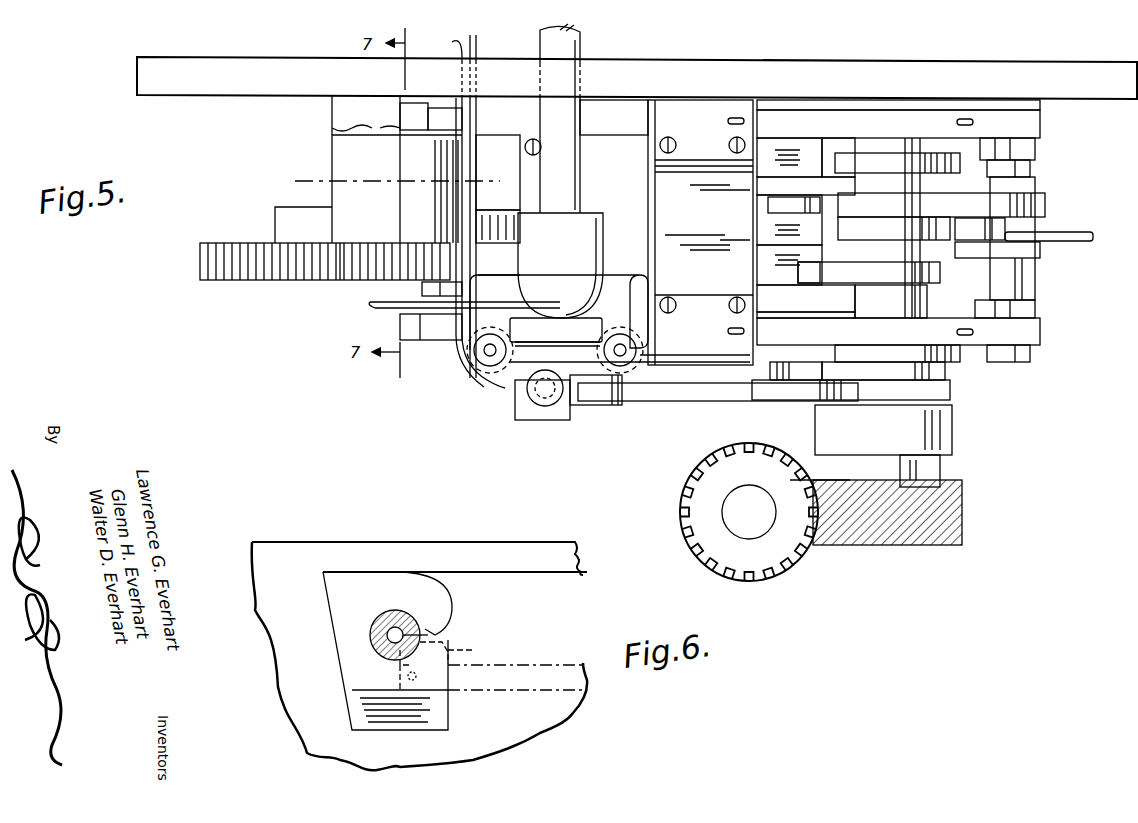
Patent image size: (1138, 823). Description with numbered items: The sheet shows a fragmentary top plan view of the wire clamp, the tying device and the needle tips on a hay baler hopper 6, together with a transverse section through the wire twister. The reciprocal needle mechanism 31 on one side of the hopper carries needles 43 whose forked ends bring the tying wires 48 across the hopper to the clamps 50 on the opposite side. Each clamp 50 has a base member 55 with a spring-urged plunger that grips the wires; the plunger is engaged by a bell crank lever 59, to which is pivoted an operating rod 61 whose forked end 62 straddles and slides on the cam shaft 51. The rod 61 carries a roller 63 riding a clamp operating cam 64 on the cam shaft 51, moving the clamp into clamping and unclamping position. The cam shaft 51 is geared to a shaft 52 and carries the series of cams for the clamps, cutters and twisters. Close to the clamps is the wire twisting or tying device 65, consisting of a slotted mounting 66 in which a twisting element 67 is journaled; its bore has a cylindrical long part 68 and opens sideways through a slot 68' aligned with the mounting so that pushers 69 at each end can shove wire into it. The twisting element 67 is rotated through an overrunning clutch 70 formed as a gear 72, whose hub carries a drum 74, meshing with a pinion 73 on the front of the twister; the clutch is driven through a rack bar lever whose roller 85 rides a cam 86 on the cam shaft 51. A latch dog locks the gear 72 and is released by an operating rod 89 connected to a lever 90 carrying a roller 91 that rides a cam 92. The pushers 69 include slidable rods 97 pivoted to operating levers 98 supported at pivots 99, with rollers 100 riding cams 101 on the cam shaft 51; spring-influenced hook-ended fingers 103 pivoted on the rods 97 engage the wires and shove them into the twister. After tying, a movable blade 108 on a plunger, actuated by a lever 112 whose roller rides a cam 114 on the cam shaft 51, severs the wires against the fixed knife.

In FIG. 5, the hopper 6 is at (395, 181).
In FIG. 5, the needle mechanism 31 is at (580, 225).
In FIG. 5, the needles 43 is at (578, 52).
In FIG. 5, the tying wires 48 is at (655, 200).
In FIG. 5, the clamps 50 is at (530, 402).
In FIG. 5, the cam shaft 51 is at (891, 301).
In FIG. 5, the shaft 52 is at (821, 512).
In FIG. 5, the base member 55 is at (550, 420).
In FIG. 5, the bell crank lever 59 is at (602, 406).
In FIG. 5, the operating rod 61 is at (672, 400).
In FIG. 5, the forked end 62 is at (851, 390).
In FIG. 5, the roller 63 is at (790, 380).
In FIG. 5, the clamp operating cam 64 is at (883, 371).
In FIG. 5, the wire twisting or tying device 65 is at (328, 150).
In FIG. 6, the wire twisting or tying device 65 is at (340, 596).
In FIG. 5, the slotted mounting 66 is at (758, 74).
In FIG. 6, the slotted mounting 66 is at (426, 596).
In FIG. 6, the twisting element 67 is at (405, 602).
In FIG. 6, the cylindrical long part of the bore 68 is at (389, 644).
In FIG. 6, the slot 68' is at (449, 624).
In FIG. 5, the pushers 69 is at (492, 118).
In FIG. 6, the pushers 69 is at (538, 664).
In FIG. 5, the clutch 70 is at (275, 282).
In FIG. 5, the gear 72 is at (232, 272).
In FIG. 5, the pinion 73 is at (365, 272).
In FIG. 5, the drum 74 is at (283, 218).
In FIG. 5, the roller 85 is at (794, 204).
In FIG. 5, the cam 86 is at (941, 205).
In FIG. 5, the operating rod 89 is at (1092, 236).
In FIG. 5, the lever 90 is at (1020, 250).
In FIG. 5, the roller 91 is at (980, 229).
In FIG. 5, the cam 92 is at (894, 228).
In FIG. 5, the rods 97 is at (608, 122).
In FIG. 5, the operating levers 98 is at (1030, 150).
In FIG. 5, the pivot support 99 is at (1020, 281).
In FIG. 5, the rollers 100 is at (1035, 168).
In FIG. 5, the cams 101 is at (897, 258).
In FIG. 5, the fingers 103 is at (416, 108).
In FIG. 6, the fingers 103 is at (478, 648).
In FIG. 5, the movable blade 108 is at (378, 306).
In FIG. 5, the lever 112 is at (806, 301).
In FIG. 5, the cam 114 is at (869, 272).